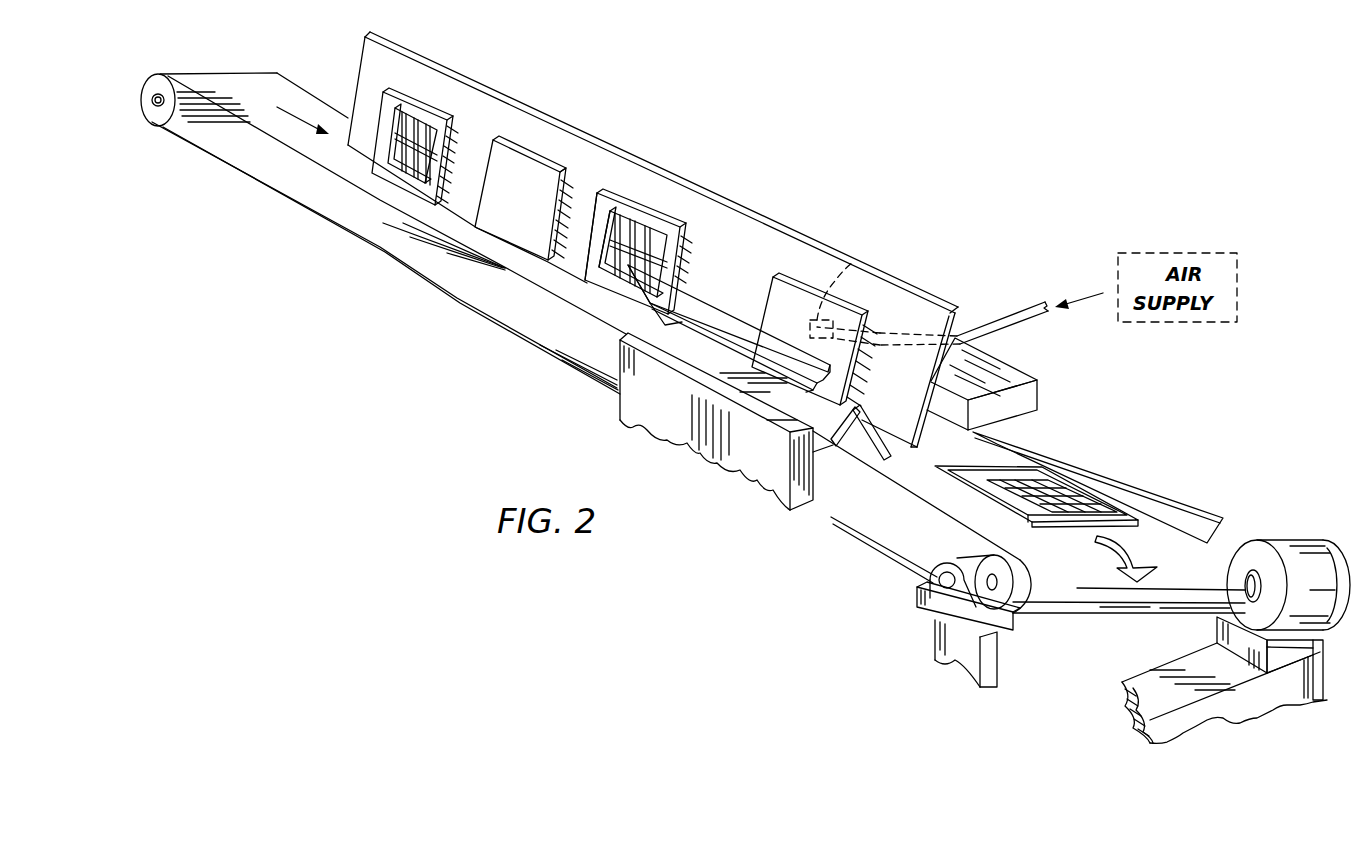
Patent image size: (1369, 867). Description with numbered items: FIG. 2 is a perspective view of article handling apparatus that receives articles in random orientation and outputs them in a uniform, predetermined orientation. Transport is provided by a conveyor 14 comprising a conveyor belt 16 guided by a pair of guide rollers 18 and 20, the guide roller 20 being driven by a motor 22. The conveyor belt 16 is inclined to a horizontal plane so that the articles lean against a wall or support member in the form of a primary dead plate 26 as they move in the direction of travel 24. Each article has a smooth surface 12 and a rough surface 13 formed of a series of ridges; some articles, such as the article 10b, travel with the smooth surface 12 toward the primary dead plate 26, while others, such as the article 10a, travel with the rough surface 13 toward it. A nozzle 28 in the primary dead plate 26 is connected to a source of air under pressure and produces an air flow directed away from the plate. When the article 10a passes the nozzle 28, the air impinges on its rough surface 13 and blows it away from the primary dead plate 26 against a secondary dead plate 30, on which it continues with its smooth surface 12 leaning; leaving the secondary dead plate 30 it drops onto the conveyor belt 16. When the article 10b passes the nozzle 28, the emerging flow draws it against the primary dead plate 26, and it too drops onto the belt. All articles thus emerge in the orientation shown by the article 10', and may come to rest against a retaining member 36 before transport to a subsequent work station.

The conveyor 14 is at (211, 66).
The conveyor belt 16 is at (262, 82).
The guide roller 18 is at (163, 118).
The guide roller 20 is at (997, 598).
The motor 22 is at (1283, 542).
The direction of belt travel 24 is at (290, 115).
The primary dead plate 26 is at (753, 223).
The nozzle 28 is at (862, 261).
The secondary dead plate 30 is at (708, 320).
The retaining member 36 is at (1148, 483).
The article 10a is at (524, 136).
The article 10b is at (428, 88).
The smooth surface 12 is at (553, 163).
The rough surface 13 is at (612, 225).
The article 10' is at (1036, 470).